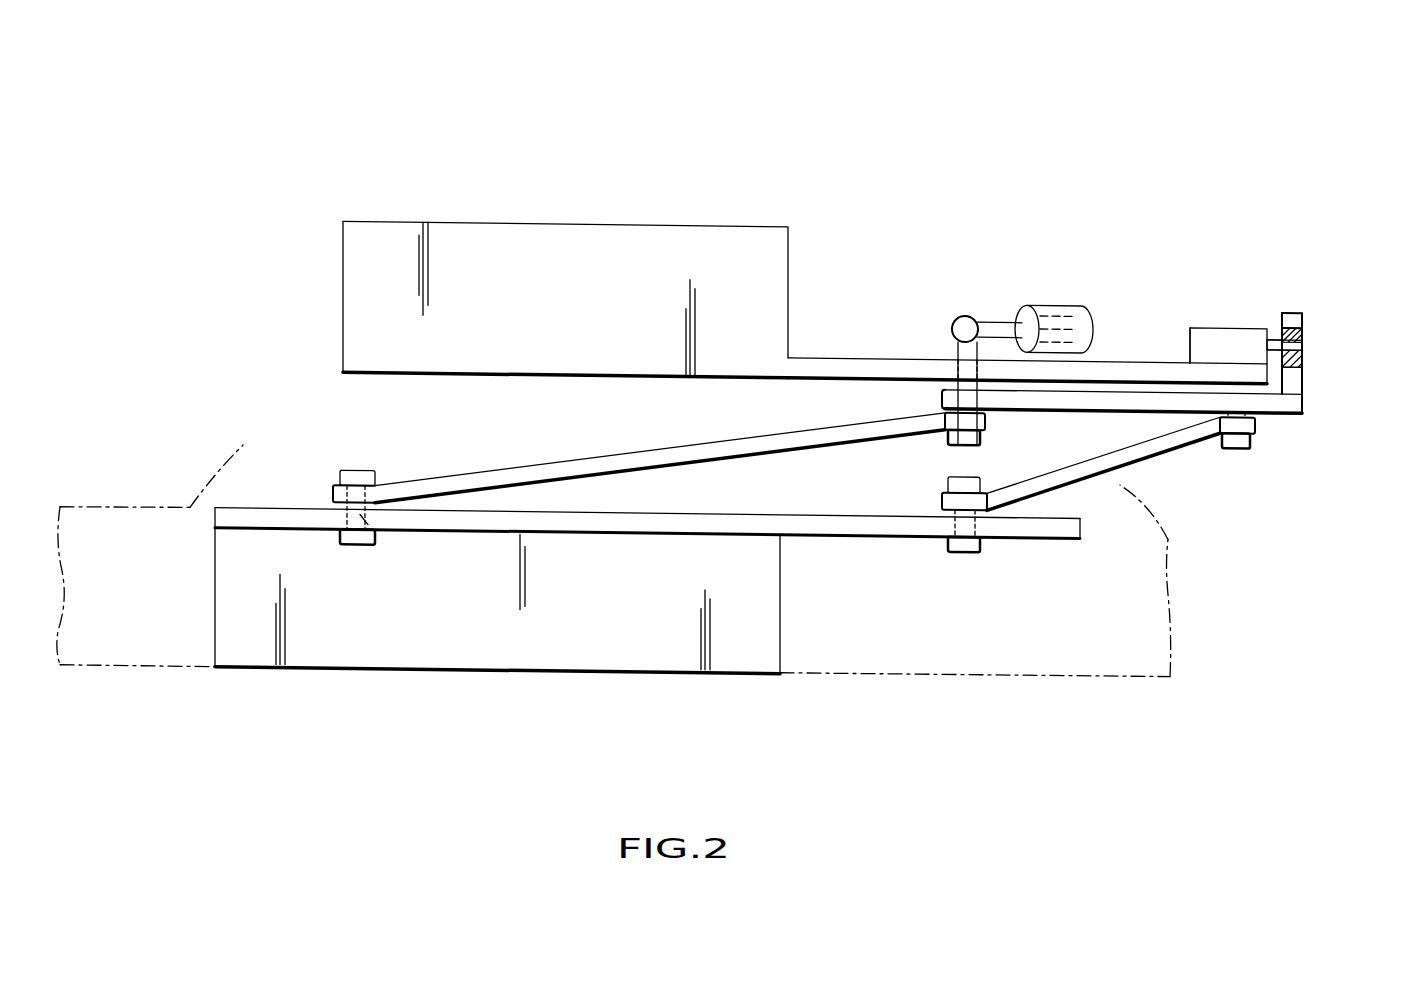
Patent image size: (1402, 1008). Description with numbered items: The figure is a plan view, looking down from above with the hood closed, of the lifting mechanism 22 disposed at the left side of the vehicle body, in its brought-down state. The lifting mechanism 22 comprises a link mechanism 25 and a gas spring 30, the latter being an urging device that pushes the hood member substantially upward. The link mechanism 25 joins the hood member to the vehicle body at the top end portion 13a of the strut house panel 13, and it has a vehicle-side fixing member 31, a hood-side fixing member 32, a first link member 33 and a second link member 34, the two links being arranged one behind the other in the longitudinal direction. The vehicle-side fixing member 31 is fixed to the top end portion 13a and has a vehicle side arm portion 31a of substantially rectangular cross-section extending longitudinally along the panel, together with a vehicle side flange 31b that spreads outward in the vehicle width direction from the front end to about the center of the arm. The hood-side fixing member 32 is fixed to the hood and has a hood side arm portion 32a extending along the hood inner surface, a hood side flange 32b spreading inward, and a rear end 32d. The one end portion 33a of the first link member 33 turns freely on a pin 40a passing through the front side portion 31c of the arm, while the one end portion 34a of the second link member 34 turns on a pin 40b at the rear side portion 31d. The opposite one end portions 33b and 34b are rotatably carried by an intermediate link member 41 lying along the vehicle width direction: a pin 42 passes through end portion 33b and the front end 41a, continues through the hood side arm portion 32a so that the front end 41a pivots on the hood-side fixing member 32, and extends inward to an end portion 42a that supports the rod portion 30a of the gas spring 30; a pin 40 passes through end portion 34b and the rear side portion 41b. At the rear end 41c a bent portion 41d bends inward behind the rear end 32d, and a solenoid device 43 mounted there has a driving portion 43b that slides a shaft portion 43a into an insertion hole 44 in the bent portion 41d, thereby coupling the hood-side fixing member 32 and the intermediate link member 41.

The strut house panel 13 is at (614, 602).
The top end portion 13a is at (998, 664).
The lifting mechanism 22 is at (848, 140).
The link mechanism 25 is at (352, 297).
The gas spring 30 is at (1060, 293).
The rod portion 30a is at (1008, 309).
The vehicle-side fixing member 31 is at (643, 642).
The vehicle side arm portion 31a is at (848, 525).
The vehicle side flange 31b is at (507, 664).
The front side portion 31c is at (368, 514).
The rear side portion 31d is at (1010, 516).
The hood-side fixing member 32 is at (553, 248).
The hood side arm portion 32a is at (823, 348).
The hood side flange 32b is at (707, 231).
The rear end 32d is at (1262, 362).
The first link member 33 is at (553, 457).
The one end portion 33a is at (333, 486).
The one end portion 33b is at (986, 410).
The second link member 34 is at (1153, 442).
The one end portion 34a is at (942, 486).
The one end portion 34b is at (1255, 414).
The pin 40 is at (1235, 433).
The pin 40a is at (352, 540).
The pin 40b is at (962, 540).
The intermediate link member 41 is at (1087, 398).
The front end 41a is at (948, 378).
The rear side portion 41b is at (1285, 398).
The rear end 41c is at (1292, 384).
The bent portion 41d is at (1295, 297).
The pin 42 is at (960, 428).
The end portion 42a is at (965, 304).
The solenoid device 43 is at (1200, 313).
The shaft portion 43a is at (1277, 324).
The driving portion 43b is at (1190, 335).
The insertion hole 44 is at (1302, 327).